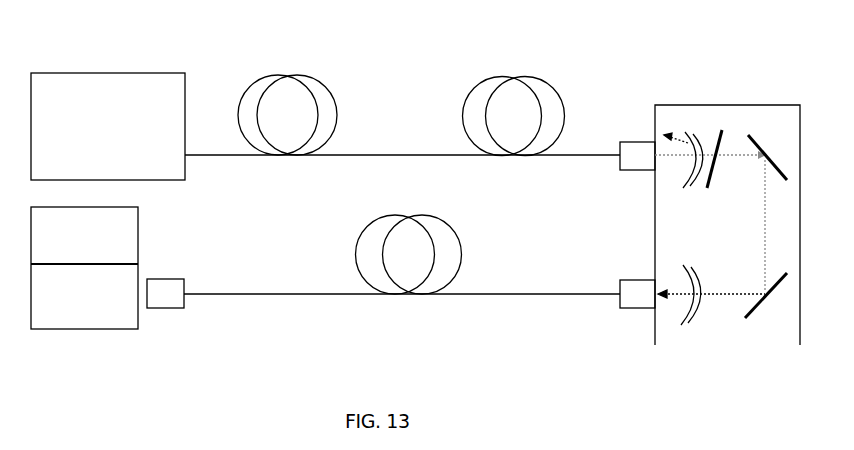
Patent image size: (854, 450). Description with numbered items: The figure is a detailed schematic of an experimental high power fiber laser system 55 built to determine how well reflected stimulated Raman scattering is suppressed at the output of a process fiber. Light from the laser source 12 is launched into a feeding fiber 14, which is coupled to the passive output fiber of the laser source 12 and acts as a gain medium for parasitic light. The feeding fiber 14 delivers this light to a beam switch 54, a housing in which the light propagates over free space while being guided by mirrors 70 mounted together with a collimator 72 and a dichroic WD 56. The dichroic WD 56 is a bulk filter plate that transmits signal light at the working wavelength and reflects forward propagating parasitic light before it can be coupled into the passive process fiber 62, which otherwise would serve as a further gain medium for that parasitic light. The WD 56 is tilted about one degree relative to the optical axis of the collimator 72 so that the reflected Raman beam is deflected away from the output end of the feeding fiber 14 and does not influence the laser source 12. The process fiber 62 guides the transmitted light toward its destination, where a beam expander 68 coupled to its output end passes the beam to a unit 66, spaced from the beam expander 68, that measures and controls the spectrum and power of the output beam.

The laser source 12 is at (108, 141).
The feeding fiber 14 is at (360, 150).
The high power fiber laser system 55 is at (453, 178).
The dichroic WD 56 is at (713, 172).
The passive process fiber 62 is at (250, 293).
The unit 66 is at (125, 248).
The beam expander 68 is at (170, 293).
The mirrors 70 is at (767, 157).
The collimator 72 is at (685, 190).
The beam switch 54 is at (722, 327).